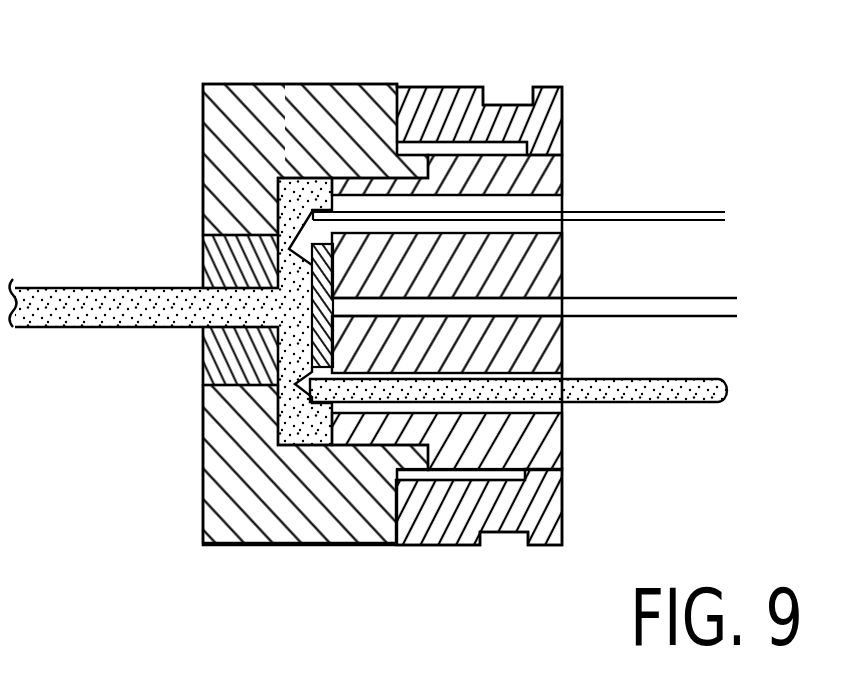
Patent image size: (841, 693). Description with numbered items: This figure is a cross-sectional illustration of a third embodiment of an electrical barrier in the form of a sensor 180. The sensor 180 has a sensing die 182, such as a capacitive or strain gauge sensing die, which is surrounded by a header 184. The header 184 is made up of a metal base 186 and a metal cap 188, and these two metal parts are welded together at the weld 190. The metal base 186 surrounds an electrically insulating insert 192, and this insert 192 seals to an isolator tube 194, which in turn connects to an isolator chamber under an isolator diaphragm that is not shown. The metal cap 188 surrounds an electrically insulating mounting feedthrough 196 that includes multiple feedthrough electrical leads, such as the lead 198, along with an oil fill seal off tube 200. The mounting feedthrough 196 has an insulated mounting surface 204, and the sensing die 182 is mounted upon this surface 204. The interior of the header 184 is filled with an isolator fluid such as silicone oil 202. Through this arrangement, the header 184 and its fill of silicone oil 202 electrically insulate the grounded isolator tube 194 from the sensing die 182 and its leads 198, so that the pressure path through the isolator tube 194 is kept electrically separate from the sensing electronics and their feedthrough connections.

The sensor 180 is at (455, 296).
The sensing die 182 is at (312, 341).
The header 184 is at (544, 489).
The metal base 186 is at (203, 100).
The metal cap 188 is at (460, 87).
The weld 190 is at (397, 87).
The electrically insulating insert 192 is at (203, 250).
The isolator tube 194 is at (98, 287).
The electrically insulating mounting feedthrough 196 is at (562, 263).
The feedthrough electrical lead 198 is at (638, 212).
The oil fill seal off tube 200 is at (600, 381).
The silicone oil 202 is at (298, 188).
The insulated mounting surface 204 is at (312, 341).